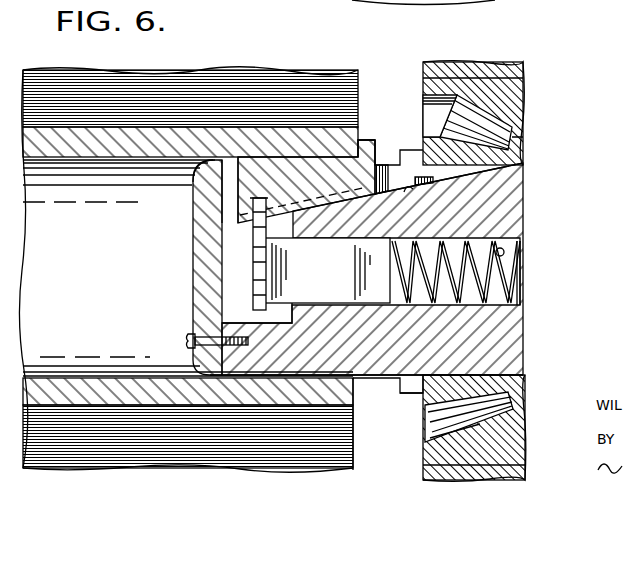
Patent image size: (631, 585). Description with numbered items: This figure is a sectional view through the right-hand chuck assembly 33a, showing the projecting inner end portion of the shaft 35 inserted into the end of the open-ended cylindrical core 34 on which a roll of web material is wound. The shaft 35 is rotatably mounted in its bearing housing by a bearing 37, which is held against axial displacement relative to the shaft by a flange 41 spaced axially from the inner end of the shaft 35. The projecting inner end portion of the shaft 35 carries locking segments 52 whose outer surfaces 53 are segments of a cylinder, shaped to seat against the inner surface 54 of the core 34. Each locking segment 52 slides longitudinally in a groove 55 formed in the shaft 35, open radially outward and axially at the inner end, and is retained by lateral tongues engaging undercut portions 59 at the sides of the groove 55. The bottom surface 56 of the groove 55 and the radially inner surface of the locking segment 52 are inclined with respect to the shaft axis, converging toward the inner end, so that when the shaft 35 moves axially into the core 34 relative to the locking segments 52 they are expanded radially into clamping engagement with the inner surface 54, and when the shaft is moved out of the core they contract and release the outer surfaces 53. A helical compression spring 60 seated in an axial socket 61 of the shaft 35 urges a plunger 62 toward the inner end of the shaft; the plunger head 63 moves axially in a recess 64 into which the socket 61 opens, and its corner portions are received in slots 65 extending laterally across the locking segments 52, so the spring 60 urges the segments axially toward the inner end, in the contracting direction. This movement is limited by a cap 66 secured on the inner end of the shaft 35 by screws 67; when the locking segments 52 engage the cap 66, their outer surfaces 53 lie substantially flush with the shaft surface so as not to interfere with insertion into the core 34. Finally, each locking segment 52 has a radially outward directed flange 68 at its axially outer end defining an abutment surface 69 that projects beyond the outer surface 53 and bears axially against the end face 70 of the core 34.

The right-hand chuck assembly 33a is at (560, 125).
The core 34 is at (68, 150).
The shaft 35 is at (512, 360).
The bearing 37 is at (515, 405).
The flange 41 is at (416, 395).
The locking segment 52 is at (296, 190).
The outer surface 53 is at (193, 183).
The inner surface 54 is at (110, 160).
The groove 55 is at (385, 165).
The bottom surface 56 is at (408, 192).
The undercut portion 59 is at (443, 176).
The helical compression spring 60 is at (510, 268).
The axial socket 61 is at (520, 250).
The plunger 62 is at (314, 277).
The head 63 is at (257, 259).
The recess 64 is at (237, 303).
The slot 65 is at (242, 215).
The cap 66 is at (193, 267).
The screw 67 is at (190, 341).
The flange 68 is at (373, 137).
The abutment surface 69 is at (358, 138).
The end face 70 is at (354, 405).